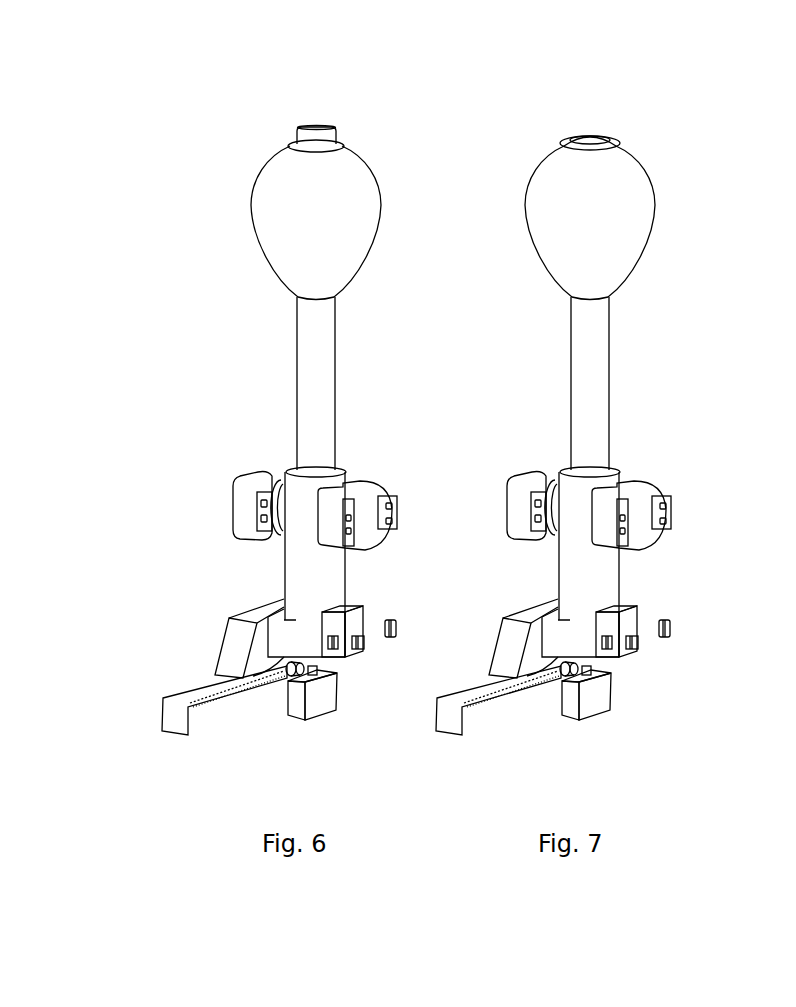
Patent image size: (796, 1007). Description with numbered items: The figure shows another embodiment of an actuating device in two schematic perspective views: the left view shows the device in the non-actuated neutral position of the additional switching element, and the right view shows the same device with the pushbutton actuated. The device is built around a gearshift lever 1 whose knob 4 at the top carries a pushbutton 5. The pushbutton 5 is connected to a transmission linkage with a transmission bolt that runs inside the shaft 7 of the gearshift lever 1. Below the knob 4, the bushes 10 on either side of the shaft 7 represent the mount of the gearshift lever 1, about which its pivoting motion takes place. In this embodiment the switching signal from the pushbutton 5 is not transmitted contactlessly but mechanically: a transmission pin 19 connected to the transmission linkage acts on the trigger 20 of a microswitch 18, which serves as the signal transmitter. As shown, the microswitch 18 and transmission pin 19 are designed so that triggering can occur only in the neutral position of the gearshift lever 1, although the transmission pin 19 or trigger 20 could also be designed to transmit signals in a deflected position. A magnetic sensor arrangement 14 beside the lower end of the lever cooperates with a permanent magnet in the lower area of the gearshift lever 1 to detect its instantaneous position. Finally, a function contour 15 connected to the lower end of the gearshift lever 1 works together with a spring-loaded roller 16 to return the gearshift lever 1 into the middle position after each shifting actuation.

In FIG. 7, the gearshift lever 1 is at (607, 417).
In FIG. 6, the knob 4 is at (285, 233).
In FIG. 6, the pushbutton 5 is at (315, 135).
In FIG. 7, the pushbutton 5 is at (576, 176).
In FIG. 6, the shaft 7 is at (315, 378).
In FIG. 6, the bushes 10 is at (245, 507).
In FIG. 7, the bushes 10 is at (587, 506).
In FIG. 6, the magnetic sensor arrangement 14 is at (337, 645).
In FIG. 6, the function contour 15 is at (237, 650).
In FIG. 7, the function contour 15 is at (524, 638).
In FIG. 6, the spring-loaded roller 16 is at (276, 694).
In FIG. 7, the spring-loaded roller 16 is at (498, 723).
In FIG. 6, the microswitch 18 is at (320, 695).
In FIG. 7, the microswitch 18 is at (596, 725).
In FIG. 7, the transmission pin 19 is at (627, 662).
In FIG. 6, the trigger 20 is at (319, 675).